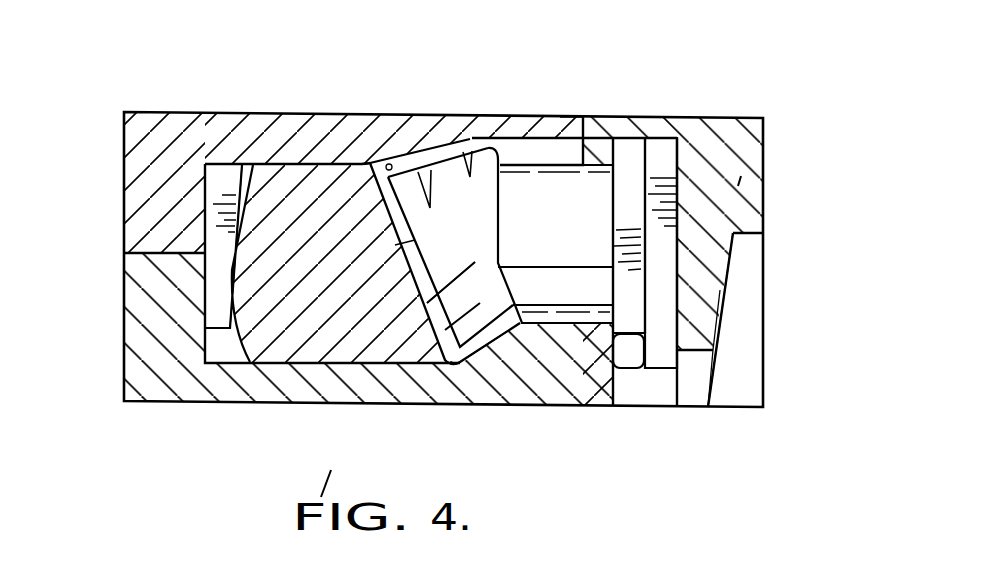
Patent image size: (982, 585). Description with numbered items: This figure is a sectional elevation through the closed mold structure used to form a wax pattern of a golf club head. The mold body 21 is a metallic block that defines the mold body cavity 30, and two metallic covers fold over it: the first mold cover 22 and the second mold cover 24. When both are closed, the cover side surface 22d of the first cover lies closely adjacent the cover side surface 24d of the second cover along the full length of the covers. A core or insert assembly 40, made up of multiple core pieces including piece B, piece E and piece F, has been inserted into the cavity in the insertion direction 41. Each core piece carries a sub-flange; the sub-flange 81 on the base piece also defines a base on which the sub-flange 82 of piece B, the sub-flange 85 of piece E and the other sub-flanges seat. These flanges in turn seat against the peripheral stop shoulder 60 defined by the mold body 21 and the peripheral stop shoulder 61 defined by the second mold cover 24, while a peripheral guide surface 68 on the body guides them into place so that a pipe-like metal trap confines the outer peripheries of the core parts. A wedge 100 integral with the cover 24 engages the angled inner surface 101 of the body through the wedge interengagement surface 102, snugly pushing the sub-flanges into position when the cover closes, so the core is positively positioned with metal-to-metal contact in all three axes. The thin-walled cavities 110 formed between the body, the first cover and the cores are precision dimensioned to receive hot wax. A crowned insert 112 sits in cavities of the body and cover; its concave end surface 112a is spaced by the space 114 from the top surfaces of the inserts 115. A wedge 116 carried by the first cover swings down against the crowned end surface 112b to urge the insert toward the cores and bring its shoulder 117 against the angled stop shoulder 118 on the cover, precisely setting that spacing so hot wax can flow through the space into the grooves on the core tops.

The mold body 21 is at (156, 389).
The first mold cover 22 is at (204, 113).
The cover side surface 22d is at (598, 134).
The second mold cover 24 is at (762, 121).
The cover side surface 24d is at (588, 130).
The mold body cavity 30 is at (394, 152).
The core or insert assembly 40 is at (472, 140).
The insertion direction 41 is at (787, 175).
The peripheral stop shoulder 60 is at (610, 353).
The peripheral stop shoulder 61 is at (637, 142).
The peripheral guide surface 68 is at (682, 285).
The sub-flange 81 is at (672, 180).
The sub-flange 82 is at (617, 208).
The sub-flange 85 is at (630, 353).
The wedge 100 is at (723, 256).
The angled inner surface 101 is at (716, 338).
The wedge interengagement surface 102 is at (718, 325).
The thin-walled cavities 110 is at (420, 150).
The crowned insert 112 is at (283, 364).
The concave end surface 112a is at (394, 258).
The crowned end surface 112b is at (236, 250).
The space 114 is at (395, 288).
The top surfaces of the inserts 115 is at (427, 306).
The wedge 116 is at (214, 192).
The shoulder 117 is at (385, 164).
The angled stop shoulder 118 is at (370, 166).
The core piece B is at (542, 220).
The core piece E is at (443, 332).
The core piece F is at (489, 345).